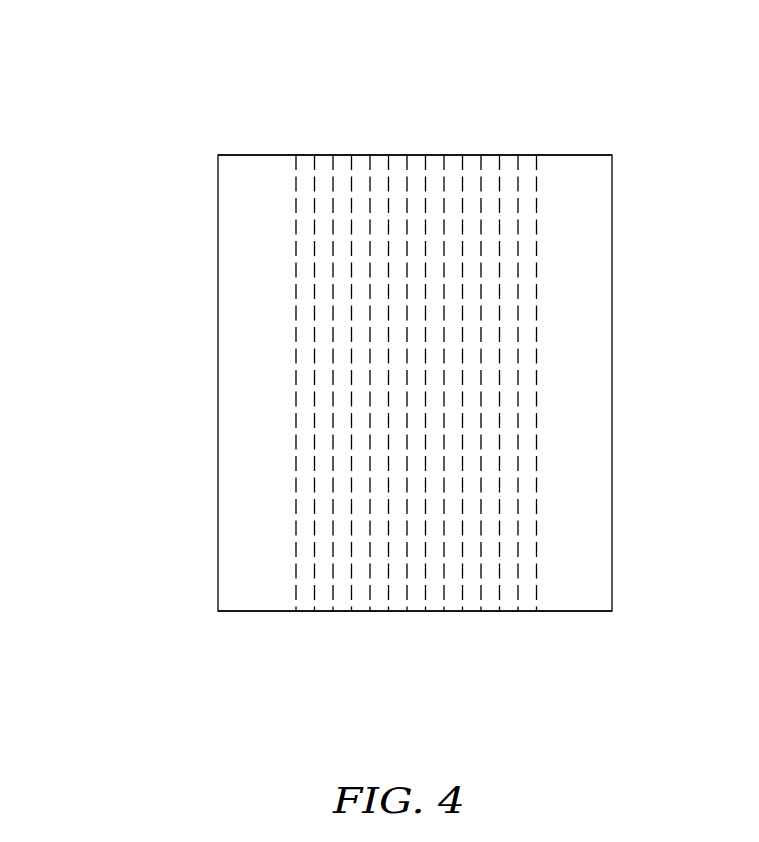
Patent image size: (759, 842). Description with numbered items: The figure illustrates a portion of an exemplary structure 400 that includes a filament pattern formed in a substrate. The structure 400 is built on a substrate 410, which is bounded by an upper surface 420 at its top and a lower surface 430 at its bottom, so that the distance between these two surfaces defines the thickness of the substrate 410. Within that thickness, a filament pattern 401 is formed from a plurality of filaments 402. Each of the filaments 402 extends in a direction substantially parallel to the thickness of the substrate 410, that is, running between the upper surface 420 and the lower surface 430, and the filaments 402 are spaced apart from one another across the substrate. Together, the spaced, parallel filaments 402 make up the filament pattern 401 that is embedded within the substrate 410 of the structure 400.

The structure 400 is at (103, 47).
The filament pattern 401 is at (537, 330).
The filaments 402 is at (528, 617).
The substrate 410 is at (255, 300).
The upper surface 420 is at (265, 155).
The lower surface 430 is at (268, 611).